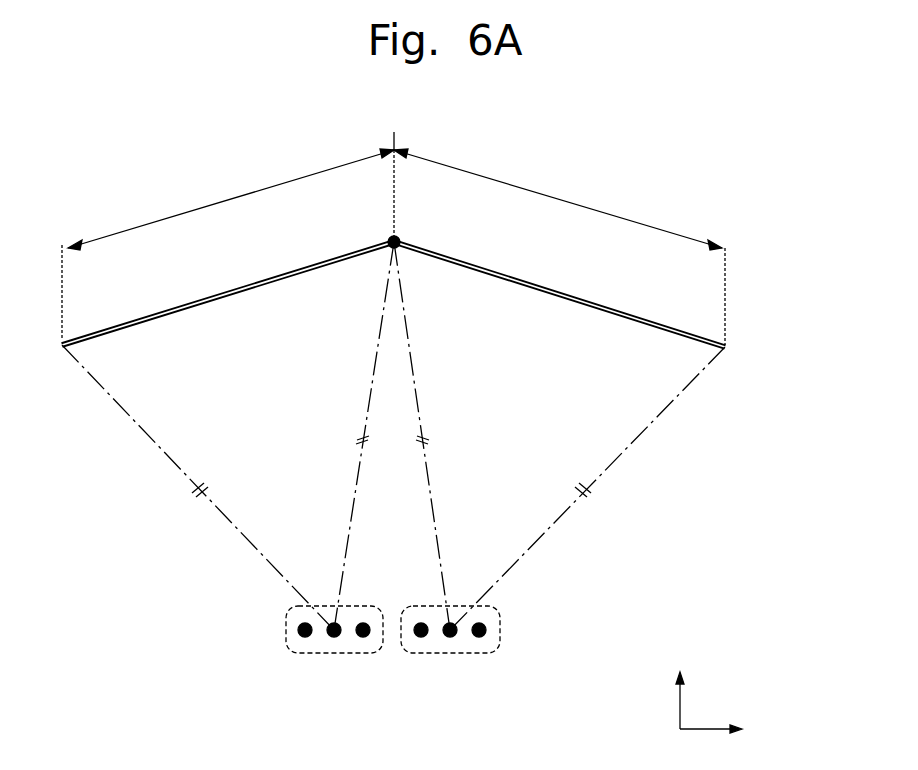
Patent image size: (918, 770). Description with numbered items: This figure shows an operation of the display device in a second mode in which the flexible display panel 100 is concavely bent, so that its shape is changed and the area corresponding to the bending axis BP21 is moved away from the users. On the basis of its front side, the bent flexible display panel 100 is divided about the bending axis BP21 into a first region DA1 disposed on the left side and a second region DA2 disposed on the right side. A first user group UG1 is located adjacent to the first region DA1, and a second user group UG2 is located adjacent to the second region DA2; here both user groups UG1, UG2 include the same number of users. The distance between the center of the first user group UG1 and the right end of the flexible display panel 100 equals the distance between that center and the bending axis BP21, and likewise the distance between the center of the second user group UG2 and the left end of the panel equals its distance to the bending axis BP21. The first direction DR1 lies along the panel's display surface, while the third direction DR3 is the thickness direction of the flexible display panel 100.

The flexible display panel 100 is at (728, 345).
The bending axis BP21 is at (398, 235).
The first region DA1 is at (228, 244).
The second region DA2 is at (559, 247).
The first user group UG1 is at (341, 654).
The second user group UG2 is at (459, 654).
The first direction DR1 is at (730, 730).
The third direction DR3 is at (683, 688).